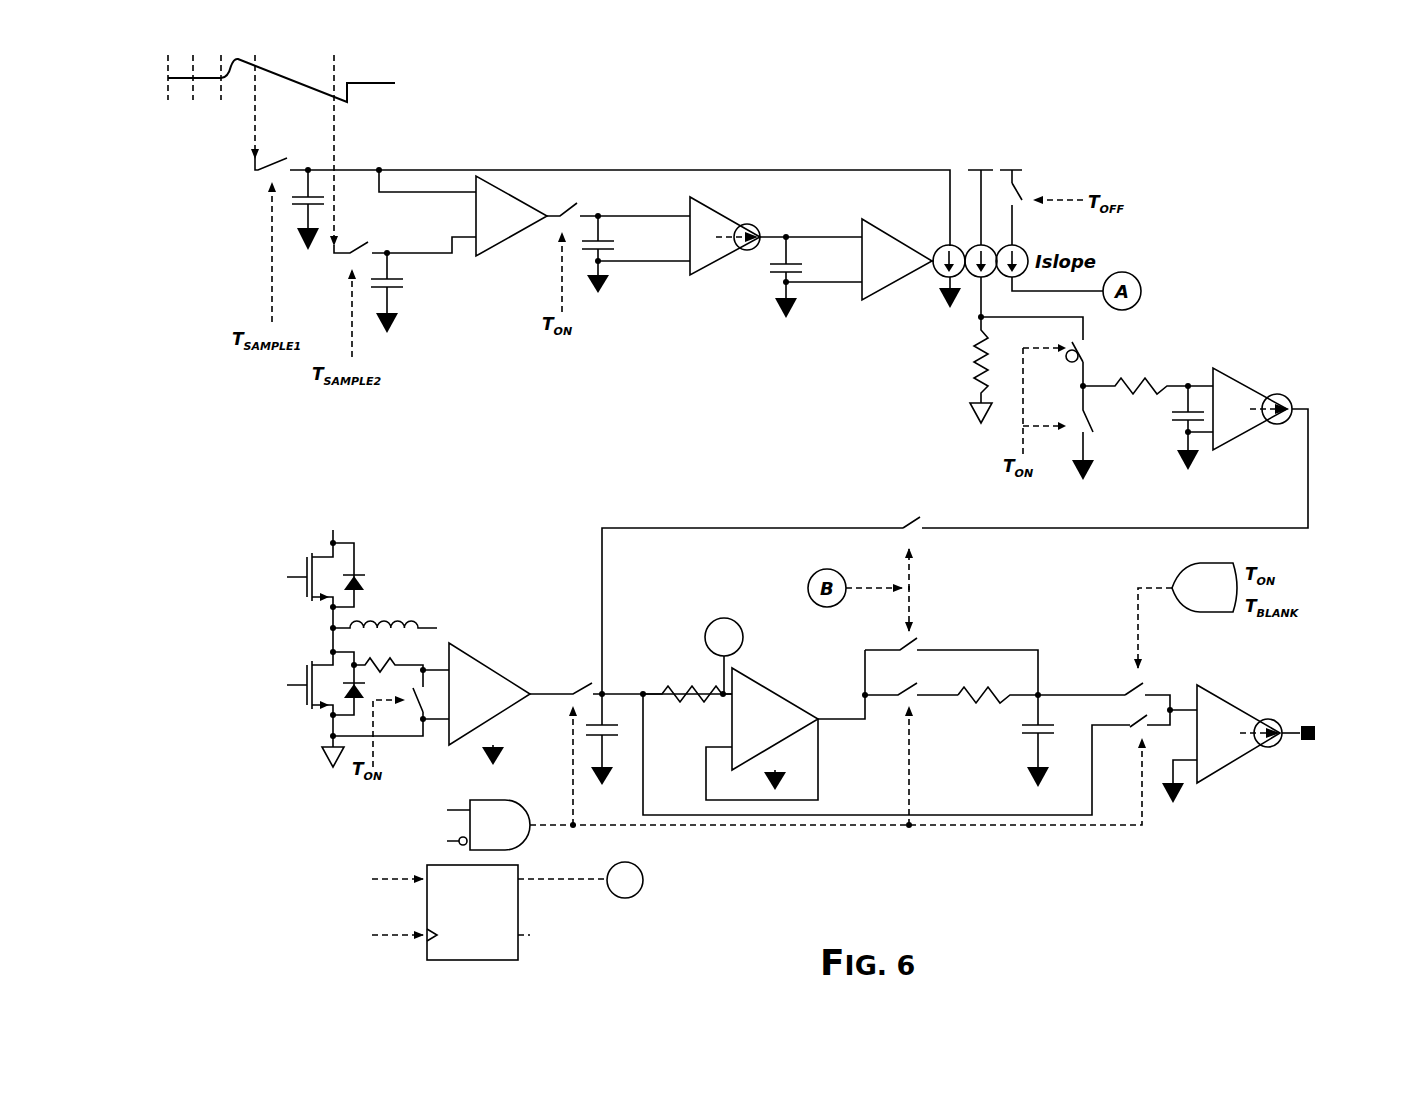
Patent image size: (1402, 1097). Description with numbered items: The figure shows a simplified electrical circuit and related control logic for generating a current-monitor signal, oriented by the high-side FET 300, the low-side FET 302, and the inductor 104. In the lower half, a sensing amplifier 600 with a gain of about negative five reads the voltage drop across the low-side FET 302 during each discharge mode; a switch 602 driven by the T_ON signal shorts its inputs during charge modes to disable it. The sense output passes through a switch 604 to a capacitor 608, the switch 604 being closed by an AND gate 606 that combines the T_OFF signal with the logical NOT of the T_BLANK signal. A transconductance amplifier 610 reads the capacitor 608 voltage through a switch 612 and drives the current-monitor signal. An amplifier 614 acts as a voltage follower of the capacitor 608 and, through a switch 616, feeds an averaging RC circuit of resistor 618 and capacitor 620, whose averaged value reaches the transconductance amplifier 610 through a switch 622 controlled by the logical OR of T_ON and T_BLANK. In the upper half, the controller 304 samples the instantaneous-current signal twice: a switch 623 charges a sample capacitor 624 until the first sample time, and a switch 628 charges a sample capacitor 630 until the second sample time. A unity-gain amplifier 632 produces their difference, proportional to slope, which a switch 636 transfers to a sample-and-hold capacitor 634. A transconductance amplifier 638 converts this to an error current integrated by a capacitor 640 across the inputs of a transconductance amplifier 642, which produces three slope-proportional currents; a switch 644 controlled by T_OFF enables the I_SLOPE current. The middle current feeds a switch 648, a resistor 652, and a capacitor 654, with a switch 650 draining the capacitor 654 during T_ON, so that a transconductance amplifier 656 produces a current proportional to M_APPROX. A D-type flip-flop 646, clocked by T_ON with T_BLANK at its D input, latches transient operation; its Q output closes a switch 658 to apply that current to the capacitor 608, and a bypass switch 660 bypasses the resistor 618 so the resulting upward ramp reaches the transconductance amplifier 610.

The switch 623 is at (262, 183).
The sample capacitor 624 is at (297, 212).
The switch 628 is at (380, 235).
The sample capacitor 630 is at (408, 296).
The amplifier 632 is at (508, 232).
The switch 636 is at (592, 200).
The sample-and-hold capacitor 634 is at (623, 250).
The transconductance amplifier 638 is at (713, 252).
The capacitor 640 is at (795, 253).
The transconductance amplifier 642 is at (888, 280).
The switch 644 is at (1027, 187).
The switch 648 is at (1097, 347).
The resistor 652 is at (1167, 373).
The capacitor 654 is at (1167, 427).
The transconductance amplifier 656 is at (1243, 395).
The switch 650 is at (1075, 427).
The switch 658 is at (902, 510).
The controller 304 is at (587, 355).
The high-side FET 300 is at (297, 558).
The low-side FET 302 is at (297, 662).
The inductor 104 is at (382, 595).
The sensing amplifier 600 is at (475, 672).
The switch 602 is at (413, 710).
The switch 604 is at (578, 673).
The capacitor 608 is at (590, 744).
The AND gate 606 is at (520, 832).
The D-type flip-flop 646 is at (518, 947).
The amplifier 614 is at (775, 707).
The bypass switch 660 is at (928, 633).
The switch 616 is at (905, 703).
The resistor 618 is at (987, 703).
The capacitor 620 is at (1018, 742).
The switch 622 is at (1122, 673).
The switch 612 is at (1128, 739).
The transconductance amplifier 610 is at (1227, 712).